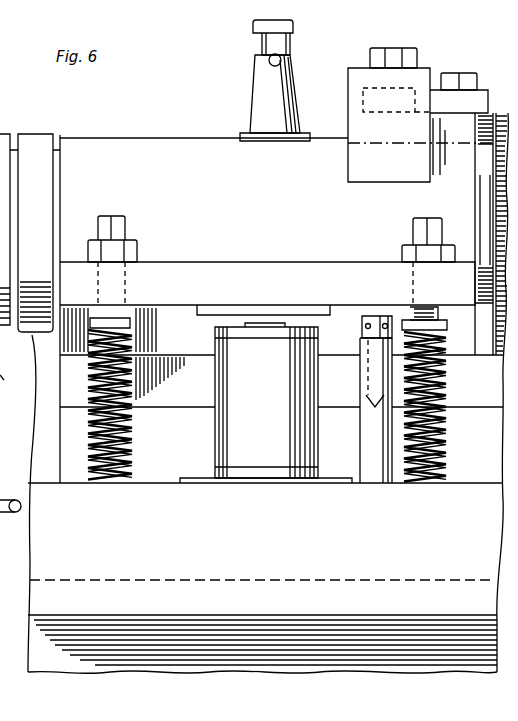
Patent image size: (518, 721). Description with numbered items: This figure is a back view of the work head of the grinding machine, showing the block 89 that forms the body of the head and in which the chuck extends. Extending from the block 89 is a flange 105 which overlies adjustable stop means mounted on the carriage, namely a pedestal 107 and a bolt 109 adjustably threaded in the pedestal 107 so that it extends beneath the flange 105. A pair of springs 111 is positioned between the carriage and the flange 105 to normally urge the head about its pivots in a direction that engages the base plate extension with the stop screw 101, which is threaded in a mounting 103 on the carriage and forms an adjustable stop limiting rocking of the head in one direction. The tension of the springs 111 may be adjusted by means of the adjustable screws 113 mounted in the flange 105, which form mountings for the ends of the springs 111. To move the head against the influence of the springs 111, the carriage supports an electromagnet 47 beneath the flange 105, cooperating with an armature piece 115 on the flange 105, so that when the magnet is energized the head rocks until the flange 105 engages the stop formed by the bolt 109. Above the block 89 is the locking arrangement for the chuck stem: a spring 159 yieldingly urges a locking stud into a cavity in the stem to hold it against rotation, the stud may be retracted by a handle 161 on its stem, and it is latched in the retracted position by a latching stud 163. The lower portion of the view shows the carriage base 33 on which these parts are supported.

The base 33 is at (265, 578).
The electromagnet 47 is at (266, 403).
The block 89 is at (402, 115).
The stop screw 101 is at (7, 393).
The mounting 103 is at (10, 481).
The flange 105 is at (267, 283).
The pedestal 107 is at (362, 443).
The bolt 109 is at (362, 326).
The springs 111 is at (130, 436).
The adjustable screws 113 is at (122, 233).
The armature piece 115 is at (202, 318).
The spring 159 is at (292, 101).
The handle 161 is at (292, 30).
The latching stud 163 is at (269, 61).